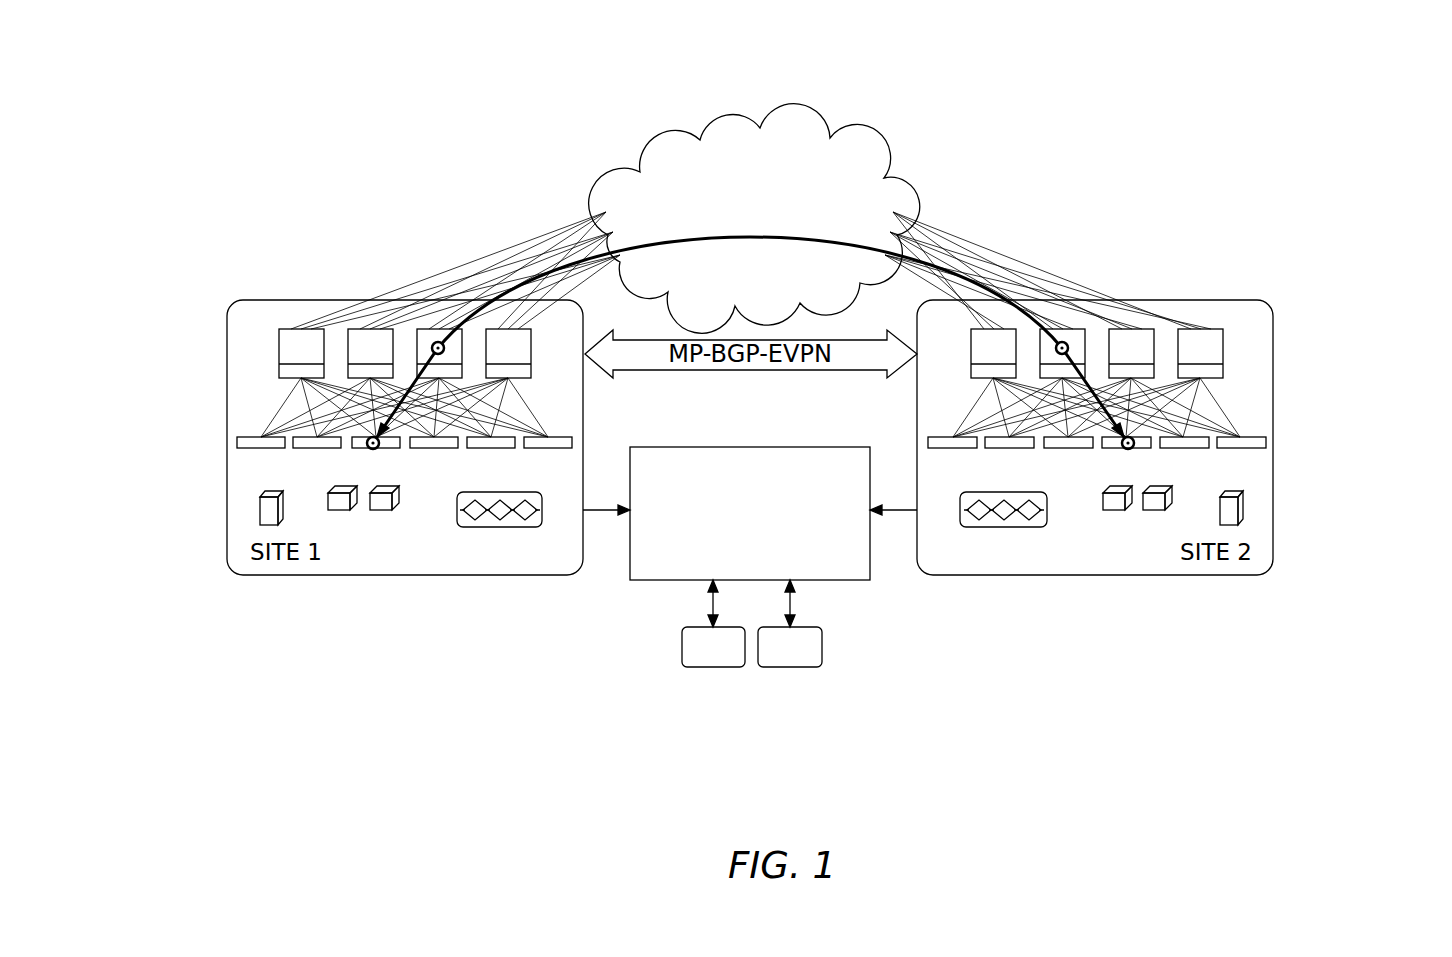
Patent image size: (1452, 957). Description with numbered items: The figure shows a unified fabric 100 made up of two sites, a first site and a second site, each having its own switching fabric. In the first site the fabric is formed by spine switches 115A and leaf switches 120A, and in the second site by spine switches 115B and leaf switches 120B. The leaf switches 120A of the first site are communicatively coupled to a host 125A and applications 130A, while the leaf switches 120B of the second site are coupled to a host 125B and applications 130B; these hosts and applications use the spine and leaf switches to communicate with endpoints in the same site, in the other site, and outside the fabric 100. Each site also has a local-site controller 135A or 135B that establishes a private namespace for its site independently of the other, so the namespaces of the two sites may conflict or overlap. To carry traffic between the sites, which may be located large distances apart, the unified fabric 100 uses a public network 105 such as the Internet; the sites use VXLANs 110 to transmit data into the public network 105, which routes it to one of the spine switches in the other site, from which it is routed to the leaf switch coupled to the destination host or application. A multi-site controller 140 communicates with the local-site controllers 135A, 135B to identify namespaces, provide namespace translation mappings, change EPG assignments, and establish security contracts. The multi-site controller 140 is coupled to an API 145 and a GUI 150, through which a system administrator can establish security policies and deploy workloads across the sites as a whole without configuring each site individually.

The unified fabric 100 is at (377, 104).
The public network 105 is at (745, 229).
The VXLANs 110 is at (1030, 231).
The spine switches 115A is at (222, 393).
The spine switches 115B is at (1282, 393).
The leaf switches 120A is at (222, 465).
The leaf switches 120B is at (1282, 465).
The host 125A is at (260, 508).
The host 125B is at (1243, 512).
The applications 130A is at (381, 510).
The applications 130B is at (1116, 510).
The local-site controller 135A is at (500, 527).
The local-site controller 135B is at (1003, 527).
The multi-site controller 140 is at (863, 532).
The API 145 is at (713, 667).
The GUI 150 is at (790, 667).